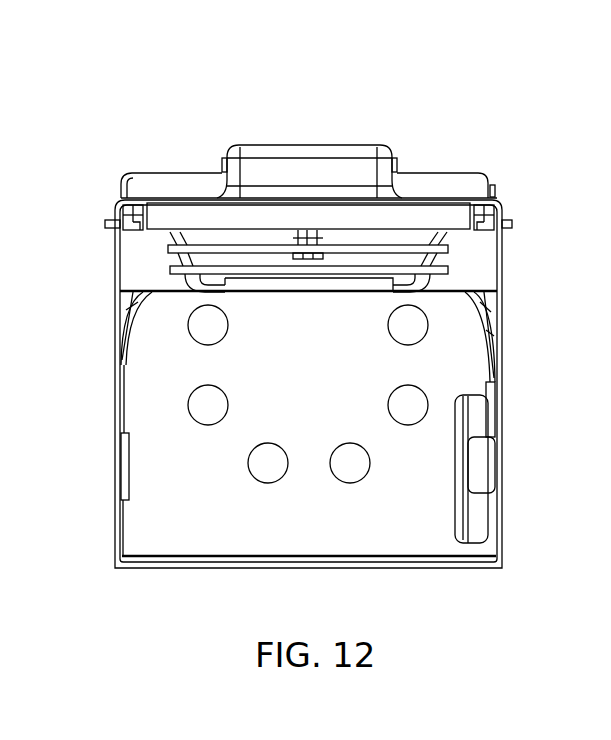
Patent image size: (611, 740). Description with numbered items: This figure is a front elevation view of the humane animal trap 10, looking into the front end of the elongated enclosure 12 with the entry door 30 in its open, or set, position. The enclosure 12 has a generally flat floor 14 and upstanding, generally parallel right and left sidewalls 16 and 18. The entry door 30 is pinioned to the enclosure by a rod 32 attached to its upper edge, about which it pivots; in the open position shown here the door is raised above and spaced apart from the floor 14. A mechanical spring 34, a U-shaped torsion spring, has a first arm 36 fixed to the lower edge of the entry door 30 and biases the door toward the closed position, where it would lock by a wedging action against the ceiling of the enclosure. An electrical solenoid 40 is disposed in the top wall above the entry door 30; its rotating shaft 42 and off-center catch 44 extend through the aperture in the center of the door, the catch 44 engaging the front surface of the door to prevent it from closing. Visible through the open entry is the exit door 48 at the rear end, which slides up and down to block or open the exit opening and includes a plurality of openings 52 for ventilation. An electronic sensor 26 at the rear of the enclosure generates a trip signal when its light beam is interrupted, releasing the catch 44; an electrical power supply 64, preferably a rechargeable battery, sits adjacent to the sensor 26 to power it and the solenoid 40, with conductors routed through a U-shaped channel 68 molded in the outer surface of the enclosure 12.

The animal trap 10 is at (441, 88).
The enclosure 12 is at (453, 181).
The floor 14 is at (206, 556).
The right sidewall 16 is at (498, 393).
The left sidewall 18 is at (116, 413).
The electronic sensor 26 is at (488, 460).
The entry door 30 is at (482, 271).
The rod 32 is at (506, 222).
The mechanical spring 34 is at (181, 258).
The first arm 36 is at (295, 294).
The electrical solenoid 40 is at (352, 155).
The shaft 42 is at (315, 242).
The catch 44 is at (297, 255).
The exit door 48 is at (316, 409).
The openings 52 is at (391, 332).
The electrical power supply 64 is at (473, 513).
The U-shaped channel 68 is at (480, 341).